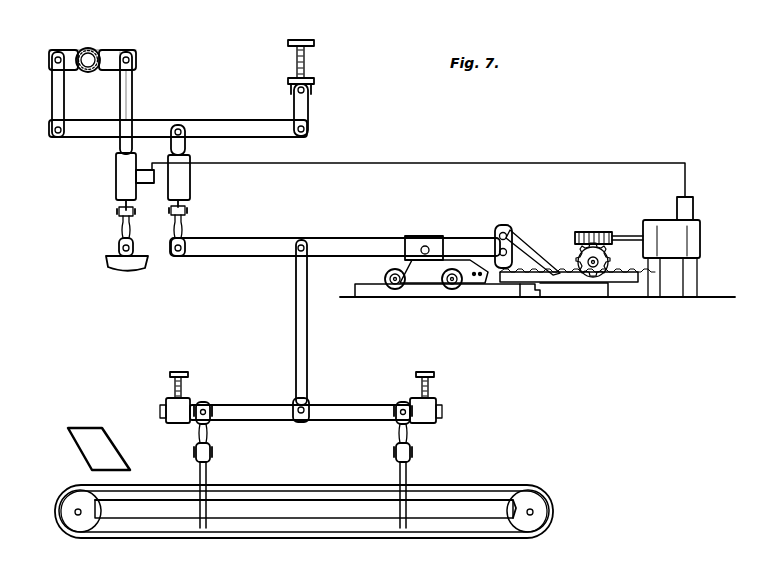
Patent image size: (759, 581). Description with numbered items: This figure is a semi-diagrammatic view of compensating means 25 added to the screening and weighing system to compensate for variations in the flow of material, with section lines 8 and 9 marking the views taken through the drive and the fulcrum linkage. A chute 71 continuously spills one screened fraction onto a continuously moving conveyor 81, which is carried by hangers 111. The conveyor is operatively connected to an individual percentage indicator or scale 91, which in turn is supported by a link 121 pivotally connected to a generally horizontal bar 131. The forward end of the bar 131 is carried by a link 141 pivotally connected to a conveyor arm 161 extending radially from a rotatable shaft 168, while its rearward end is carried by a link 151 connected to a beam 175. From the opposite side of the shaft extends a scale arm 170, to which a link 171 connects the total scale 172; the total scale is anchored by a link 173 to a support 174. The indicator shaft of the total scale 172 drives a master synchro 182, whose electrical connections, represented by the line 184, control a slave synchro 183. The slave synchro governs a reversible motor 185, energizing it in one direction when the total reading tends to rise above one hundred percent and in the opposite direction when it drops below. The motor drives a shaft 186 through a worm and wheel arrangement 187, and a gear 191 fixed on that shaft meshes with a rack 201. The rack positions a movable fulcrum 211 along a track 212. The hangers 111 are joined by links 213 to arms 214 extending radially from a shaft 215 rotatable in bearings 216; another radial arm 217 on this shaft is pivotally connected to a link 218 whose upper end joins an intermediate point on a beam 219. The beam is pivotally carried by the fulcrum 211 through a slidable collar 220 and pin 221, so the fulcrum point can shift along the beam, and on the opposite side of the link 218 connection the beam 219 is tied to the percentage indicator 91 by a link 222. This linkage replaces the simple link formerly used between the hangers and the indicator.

The compensating means 25 is at (327, 38).
The chute 71 is at (97, 428).
The conveyor 81 is at (502, 485).
The scale 91 is at (188, 183).
The hanger 111 is at (200, 476).
The link 121 is at (186, 146).
The bar 131 is at (214, 124).
The link 141 is at (57, 97).
The link 151 is at (306, 106).
The conveyor arm 161 is at (68, 53).
The shaft 168 is at (88, 48).
The scale arm 170 is at (123, 50).
The link 171 is at (129, 95).
The total scale 172 is at (120, 165).
The link 173 is at (122, 228).
The support 174 is at (110, 264).
The beam 175 is at (312, 78).
The master synchro 182 is at (140, 178).
The slave synchro 183 is at (693, 208).
The line 184 is at (652, 162).
The reversible motor 185 is at (697, 240).
The shaft 186 is at (597, 272).
The worm and wheel arrangement 187 is at (602, 225).
The gear 191 is at (578, 265).
The rack 201 is at (537, 288).
The movable fulcrum 211 is at (420, 286).
The track 212 is at (470, 290).
The link 213 is at (208, 430).
The arm 214 is at (202, 404).
The shaft 215 is at (271, 405).
The bearing 216 is at (176, 410).
The radial arm 217 is at (301, 422).
The link 218 is at (297, 318).
The beam 219 is at (248, 256).
The slidable collar 220 is at (414, 236).
The pin 221 is at (428, 248).
The link 222 is at (184, 226).
The section line 8- 8 is at (580, 320).
The section line 9- 9 is at (413, 557).